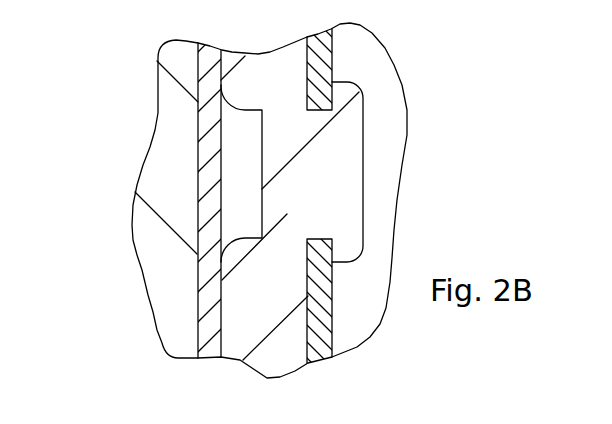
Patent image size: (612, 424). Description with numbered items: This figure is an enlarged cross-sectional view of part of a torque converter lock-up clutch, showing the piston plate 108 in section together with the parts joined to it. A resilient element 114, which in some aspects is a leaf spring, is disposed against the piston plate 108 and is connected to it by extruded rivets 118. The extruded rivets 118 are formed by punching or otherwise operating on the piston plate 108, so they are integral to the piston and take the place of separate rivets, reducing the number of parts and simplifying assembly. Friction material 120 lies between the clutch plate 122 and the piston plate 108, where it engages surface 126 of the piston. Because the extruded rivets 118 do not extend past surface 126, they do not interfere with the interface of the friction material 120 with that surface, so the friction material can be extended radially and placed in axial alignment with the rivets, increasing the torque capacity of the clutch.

The piston plate 108 is at (215, 282).
The resilient element 114 is at (331, 67).
The extruded rivets 118 is at (350, 145).
The friction material 120 is at (198, 157).
The clutch plate 122 is at (170, 62).
The surface 126 is at (229, 300).